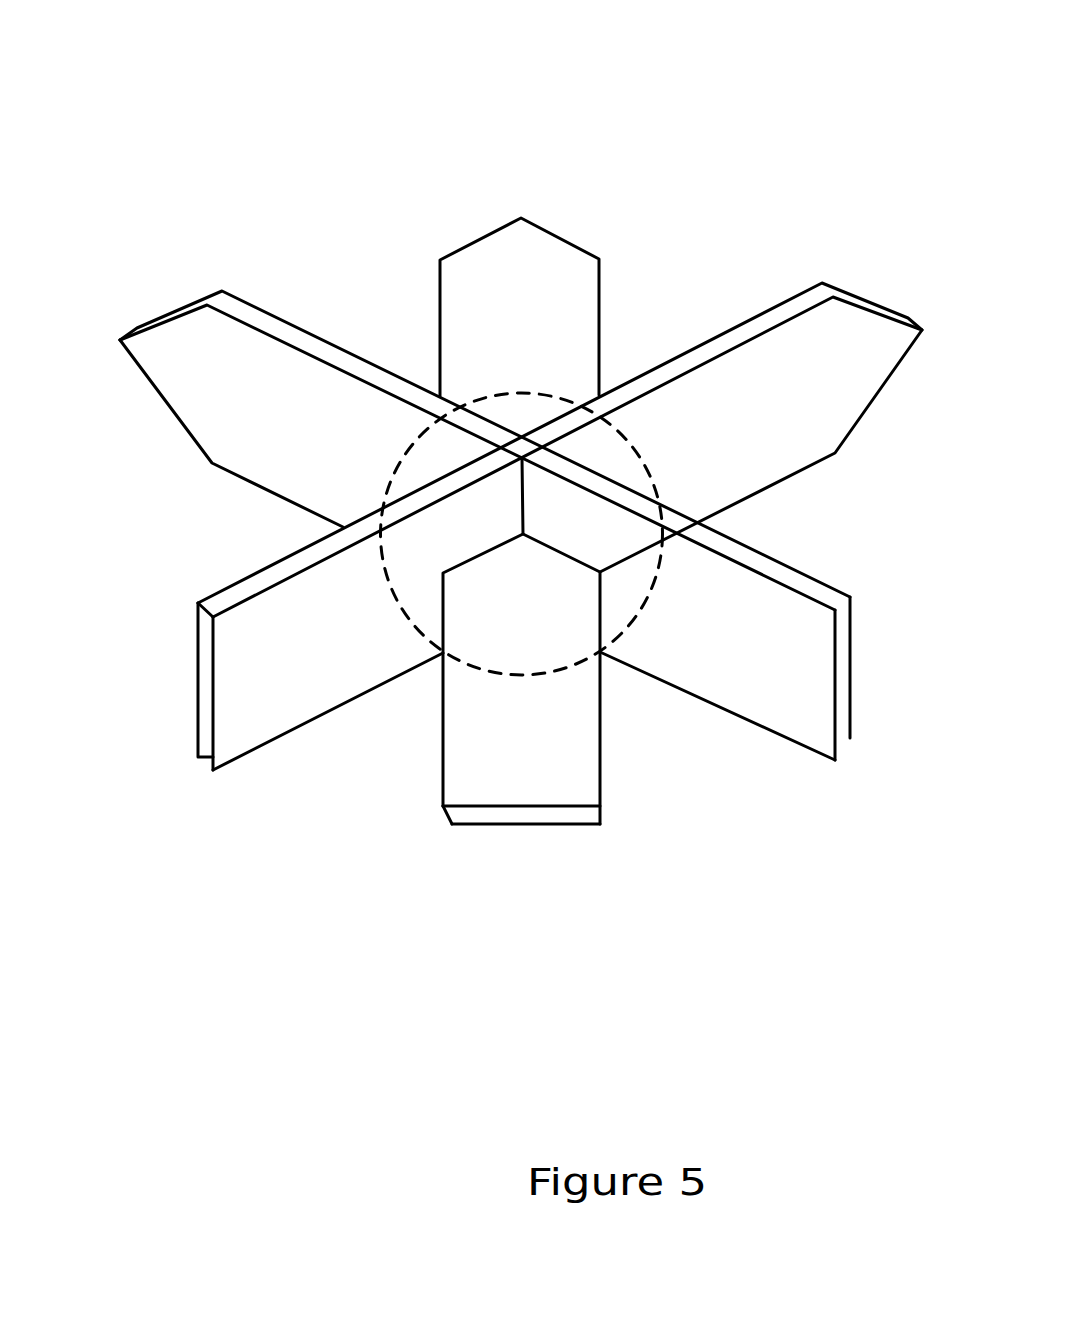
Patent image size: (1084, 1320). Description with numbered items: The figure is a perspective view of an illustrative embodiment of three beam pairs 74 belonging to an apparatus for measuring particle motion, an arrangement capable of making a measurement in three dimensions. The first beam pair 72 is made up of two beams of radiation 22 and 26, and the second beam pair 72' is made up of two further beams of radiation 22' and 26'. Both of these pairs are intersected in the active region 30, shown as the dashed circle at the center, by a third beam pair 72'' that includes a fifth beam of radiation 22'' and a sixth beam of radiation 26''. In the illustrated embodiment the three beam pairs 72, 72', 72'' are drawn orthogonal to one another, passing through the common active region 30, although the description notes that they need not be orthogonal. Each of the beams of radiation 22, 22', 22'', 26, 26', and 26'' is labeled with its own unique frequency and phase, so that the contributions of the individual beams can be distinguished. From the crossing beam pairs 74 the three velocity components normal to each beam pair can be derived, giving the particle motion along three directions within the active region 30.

The three beam pairs 74 is at (625, 118).
The active region 30 is at (642, 457).
The first beam pair 72 is at (494, 561).
The second beam pair 72' is at (528, 566).
The third beam pair 72'' is at (542, 558).
The beam of radiation 22 is at (328, 736).
The beam of radiation 22' is at (558, 848).
The fifth beam of radiation 22'' is at (892, 677).
The beam of radiation 26 is at (217, 721).
The beam of radiation 26' is at (422, 835).
The sixth beam of radiation 26'' is at (860, 717).